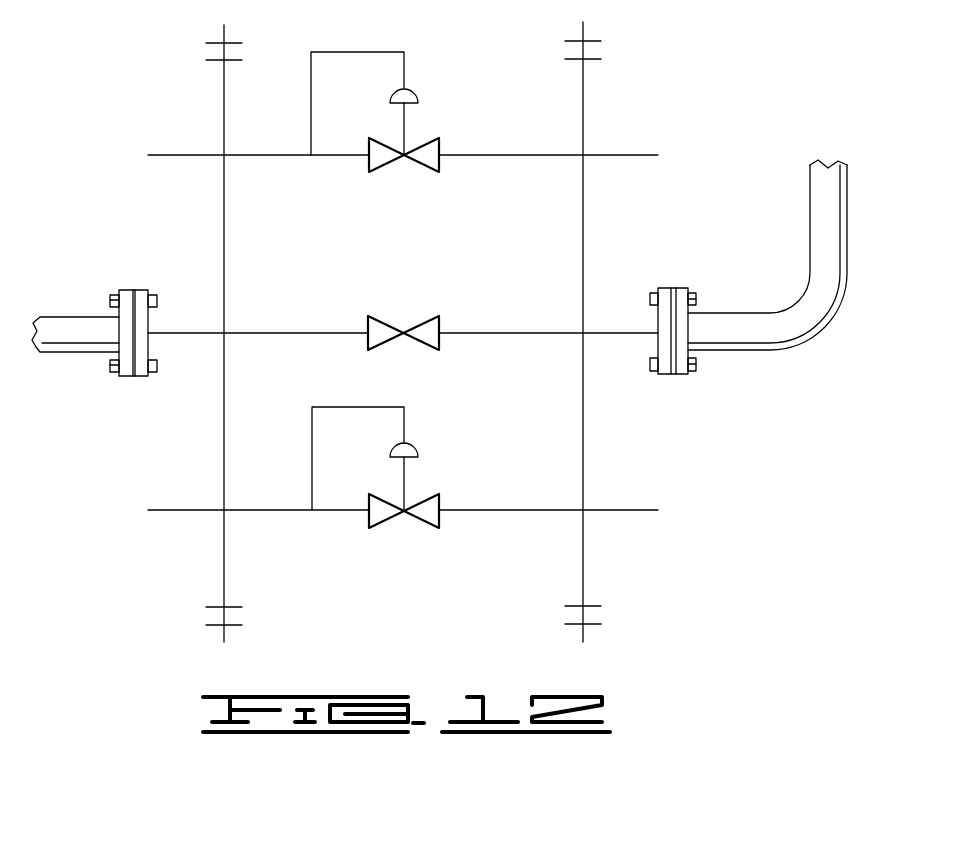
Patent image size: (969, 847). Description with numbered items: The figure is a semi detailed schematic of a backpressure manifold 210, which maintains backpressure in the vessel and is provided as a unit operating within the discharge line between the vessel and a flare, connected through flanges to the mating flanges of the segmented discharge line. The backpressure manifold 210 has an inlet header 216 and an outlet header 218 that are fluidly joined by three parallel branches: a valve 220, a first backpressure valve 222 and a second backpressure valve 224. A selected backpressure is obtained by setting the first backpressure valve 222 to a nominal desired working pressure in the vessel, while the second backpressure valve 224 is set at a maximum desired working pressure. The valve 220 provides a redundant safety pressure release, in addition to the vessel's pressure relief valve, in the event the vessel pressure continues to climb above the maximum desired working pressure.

The backpressure manifold 210 is at (162, 78).
The inlet header 216 is at (224, 225).
The outlet header 218 is at (583, 103).
The valve 220 is at (390, 322).
The first backpressure valve 222 is at (413, 91).
The second backpressure valve 224 is at (415, 446).